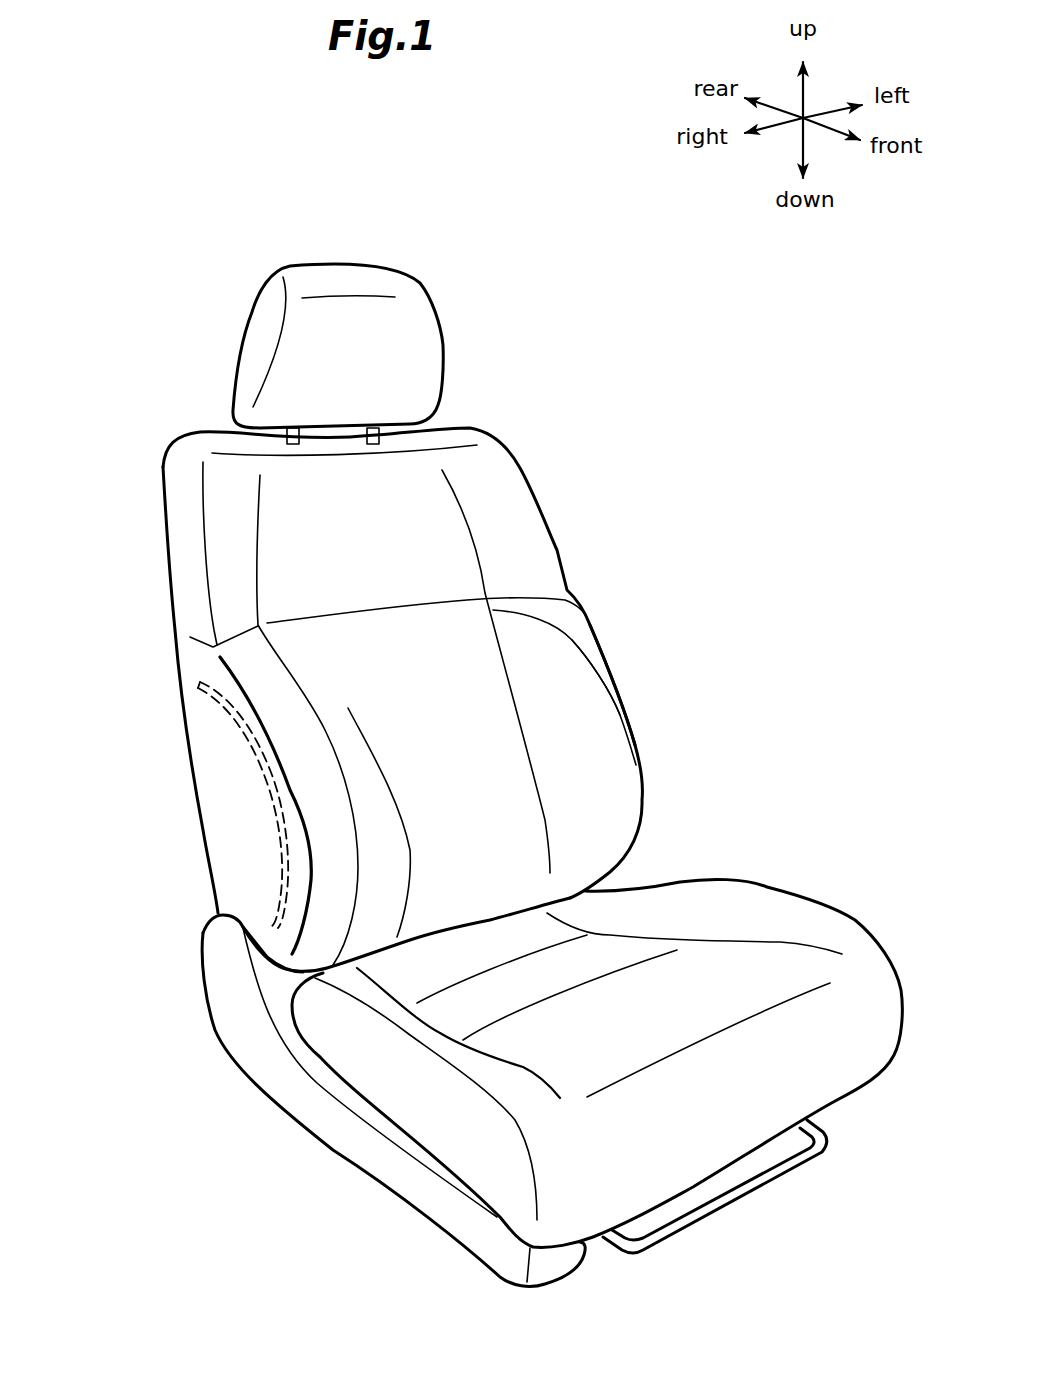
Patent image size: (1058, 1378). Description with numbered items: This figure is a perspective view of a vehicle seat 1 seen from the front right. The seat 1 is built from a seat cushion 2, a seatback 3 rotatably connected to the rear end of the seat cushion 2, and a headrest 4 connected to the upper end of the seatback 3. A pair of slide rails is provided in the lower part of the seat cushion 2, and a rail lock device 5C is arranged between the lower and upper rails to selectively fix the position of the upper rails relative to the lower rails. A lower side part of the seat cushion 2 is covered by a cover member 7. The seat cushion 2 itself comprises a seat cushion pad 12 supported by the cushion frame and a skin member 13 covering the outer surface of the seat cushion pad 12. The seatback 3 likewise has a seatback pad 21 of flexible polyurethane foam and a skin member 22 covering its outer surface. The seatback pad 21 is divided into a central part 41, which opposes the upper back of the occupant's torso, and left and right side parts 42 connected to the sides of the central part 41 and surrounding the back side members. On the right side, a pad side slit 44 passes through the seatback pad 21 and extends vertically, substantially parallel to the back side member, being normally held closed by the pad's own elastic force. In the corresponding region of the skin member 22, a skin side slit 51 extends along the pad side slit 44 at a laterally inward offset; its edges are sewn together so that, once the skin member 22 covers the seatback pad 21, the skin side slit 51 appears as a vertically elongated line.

The seat 1 is at (682, 372).
The seat cushion 2 is at (777, 887).
The seatback 3 is at (558, 543).
The headrest 4 is at (420, 327).
The cover member 7 is at (217, 988).
The seat cushion pad 12 is at (702, 897).
The skin member 13 is at (810, 913).
The seatback pad 21 is at (583, 692).
The skin member 22 is at (597, 762).
The central part 41 is at (365, 663).
The side part 42 is at (557, 652).
The pad side slit 44 is at (227, 693).
The skin side slit 51 is at (290, 795).
The rail lock device 5C is at (730, 1197).